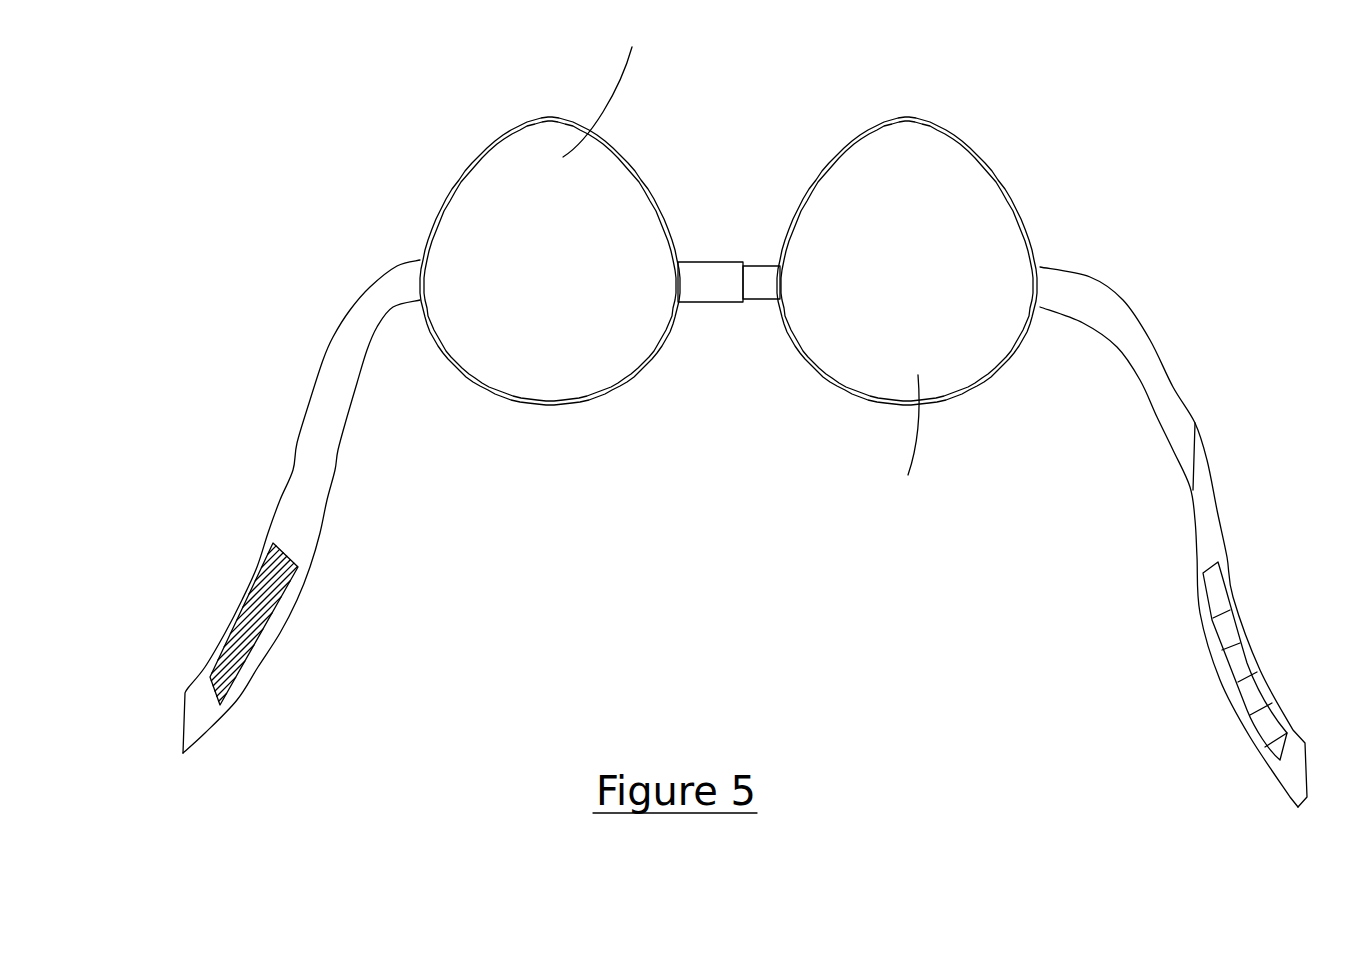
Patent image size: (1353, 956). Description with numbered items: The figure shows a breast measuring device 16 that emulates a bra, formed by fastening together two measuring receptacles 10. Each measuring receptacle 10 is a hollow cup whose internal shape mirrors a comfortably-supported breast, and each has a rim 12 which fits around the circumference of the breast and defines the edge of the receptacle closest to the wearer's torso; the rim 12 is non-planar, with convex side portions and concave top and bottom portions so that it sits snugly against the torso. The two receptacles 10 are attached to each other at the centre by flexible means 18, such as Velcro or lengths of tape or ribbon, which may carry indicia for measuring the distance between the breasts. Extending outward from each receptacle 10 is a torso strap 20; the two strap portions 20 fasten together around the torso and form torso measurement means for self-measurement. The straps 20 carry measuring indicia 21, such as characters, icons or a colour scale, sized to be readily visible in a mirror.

The measuring receptacle 10 is at (742, 260).
The rim 12 is at (490, 147).
The breast measuring device 16 is at (1168, 130).
The flexible means 18 is at (753, 277).
The torso straps 20 is at (337, 369).
The measuring indicia 21 is at (270, 563).